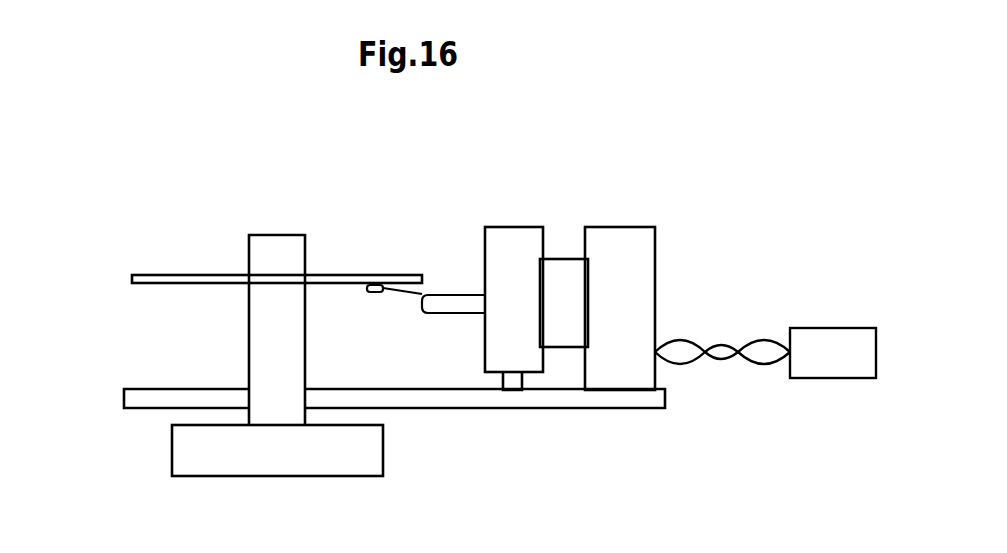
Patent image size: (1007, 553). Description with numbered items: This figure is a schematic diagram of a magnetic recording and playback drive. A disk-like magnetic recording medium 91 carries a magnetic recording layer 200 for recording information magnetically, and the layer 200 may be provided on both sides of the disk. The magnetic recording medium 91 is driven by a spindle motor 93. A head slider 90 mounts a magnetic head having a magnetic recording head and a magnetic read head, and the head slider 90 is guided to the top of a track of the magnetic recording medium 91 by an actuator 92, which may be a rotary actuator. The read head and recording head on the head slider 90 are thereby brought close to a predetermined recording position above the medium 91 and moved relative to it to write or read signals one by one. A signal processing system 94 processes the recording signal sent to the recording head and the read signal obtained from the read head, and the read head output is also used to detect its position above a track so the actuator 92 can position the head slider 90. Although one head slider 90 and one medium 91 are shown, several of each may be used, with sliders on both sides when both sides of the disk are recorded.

The magnetic recording layer 200 is at (130, 276).
The magnetic recording medium 91 is at (147, 288).
The head slider 90 is at (375, 290).
The actuator 92 is at (510, 235).
The spindle motor 93 is at (383, 442).
The signal processing system 94 is at (835, 328).